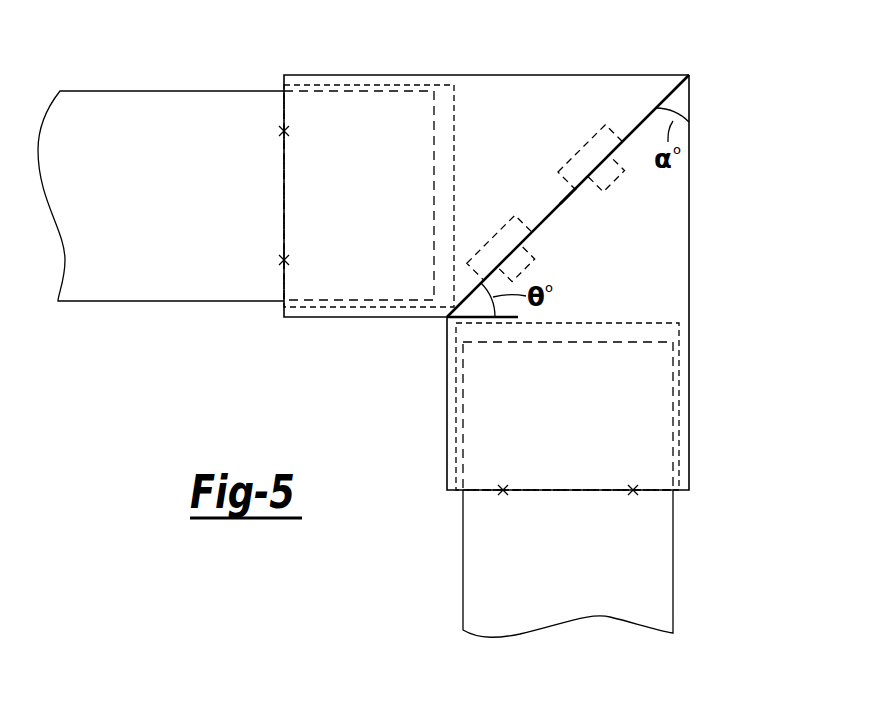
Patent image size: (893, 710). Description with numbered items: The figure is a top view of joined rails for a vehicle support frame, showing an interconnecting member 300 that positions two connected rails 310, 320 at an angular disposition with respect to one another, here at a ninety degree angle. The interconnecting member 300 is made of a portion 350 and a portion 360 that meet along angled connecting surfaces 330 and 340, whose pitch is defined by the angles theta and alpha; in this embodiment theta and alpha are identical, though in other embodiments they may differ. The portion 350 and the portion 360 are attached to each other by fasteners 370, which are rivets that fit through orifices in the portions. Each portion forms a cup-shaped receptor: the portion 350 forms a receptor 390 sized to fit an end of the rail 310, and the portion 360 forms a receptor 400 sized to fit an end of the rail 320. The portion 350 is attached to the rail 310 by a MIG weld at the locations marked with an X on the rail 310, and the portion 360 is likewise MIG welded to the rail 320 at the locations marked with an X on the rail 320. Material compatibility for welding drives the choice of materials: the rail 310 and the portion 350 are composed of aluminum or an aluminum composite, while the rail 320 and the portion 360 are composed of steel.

The interconnecting member 300 is at (533, 245).
The rail 310 is at (147, 105).
The rail 320 is at (653, 551).
The angled connecting surface 330 is at (550, 203).
The angled connecting surface 340 is at (574, 205).
The portion 350 is at (480, 91).
The portion 360 is at (667, 290).
The fastener 370 is at (583, 149).
The receptor 390 is at (350, 308).
The receptor 400 is at (677, 348).